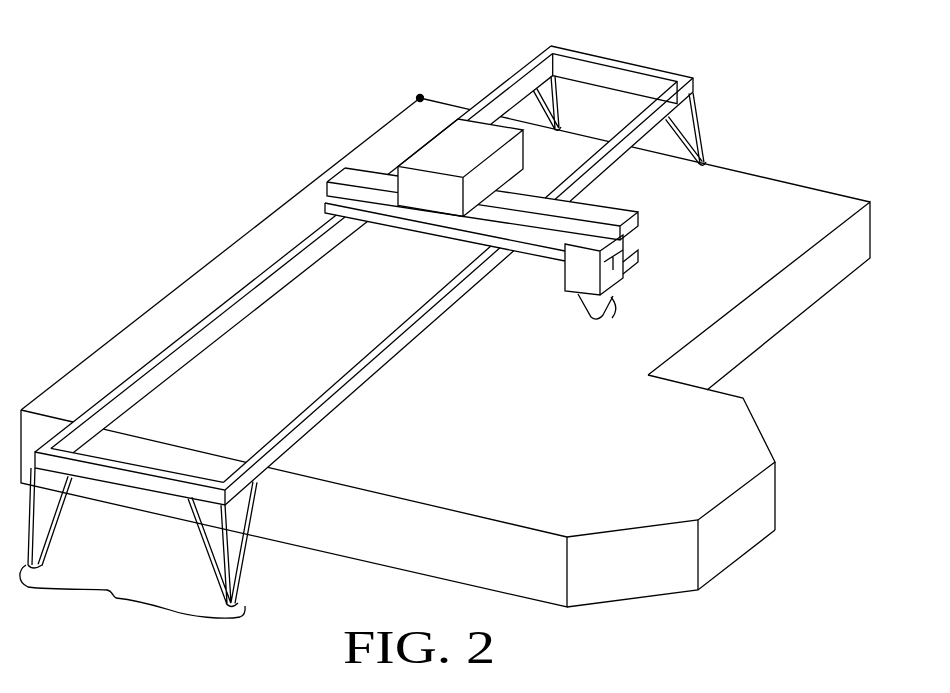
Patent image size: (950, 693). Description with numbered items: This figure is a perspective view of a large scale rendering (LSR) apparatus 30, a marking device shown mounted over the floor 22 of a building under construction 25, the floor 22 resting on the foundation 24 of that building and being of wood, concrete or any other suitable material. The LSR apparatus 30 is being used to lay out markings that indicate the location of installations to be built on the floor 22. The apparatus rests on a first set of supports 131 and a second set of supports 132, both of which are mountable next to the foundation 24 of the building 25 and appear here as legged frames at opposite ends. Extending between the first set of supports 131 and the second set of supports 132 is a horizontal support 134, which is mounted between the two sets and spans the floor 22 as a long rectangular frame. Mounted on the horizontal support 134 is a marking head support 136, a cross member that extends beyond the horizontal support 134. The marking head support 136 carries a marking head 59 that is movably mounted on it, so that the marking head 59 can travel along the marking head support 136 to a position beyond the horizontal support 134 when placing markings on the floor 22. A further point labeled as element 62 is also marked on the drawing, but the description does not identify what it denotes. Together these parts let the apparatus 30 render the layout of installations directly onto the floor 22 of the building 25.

The floor 22 is at (557, 440).
The foundation 24 is at (777, 318).
The building under construction 25 is at (788, 147).
The large scale rendering (LSR) apparatus 30 is at (407, 147).
The marking head 59 is at (617, 300).
The reference point 62 is at (421, 95).
The first set of supports 131 is at (706, 160).
The second set of supports 132 is at (111, 600).
The horizontal support 134 is at (384, 335).
The marking head support 136 is at (367, 168).